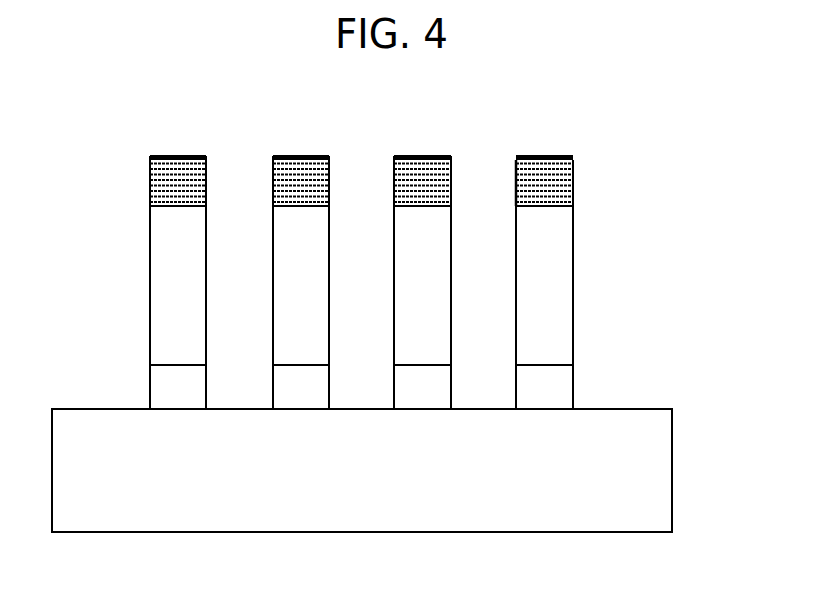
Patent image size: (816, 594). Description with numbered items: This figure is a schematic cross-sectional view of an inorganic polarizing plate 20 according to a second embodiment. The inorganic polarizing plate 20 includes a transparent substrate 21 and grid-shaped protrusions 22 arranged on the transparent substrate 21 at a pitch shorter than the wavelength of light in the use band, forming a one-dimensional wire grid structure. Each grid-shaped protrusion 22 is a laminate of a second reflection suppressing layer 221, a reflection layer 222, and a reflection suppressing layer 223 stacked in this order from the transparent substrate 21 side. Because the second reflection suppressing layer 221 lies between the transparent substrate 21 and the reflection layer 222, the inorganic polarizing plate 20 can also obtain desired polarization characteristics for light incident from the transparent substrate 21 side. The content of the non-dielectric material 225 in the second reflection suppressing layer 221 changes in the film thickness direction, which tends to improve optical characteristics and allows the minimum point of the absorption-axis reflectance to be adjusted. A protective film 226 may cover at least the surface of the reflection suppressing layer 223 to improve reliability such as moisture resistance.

The inorganic polarizing plate 20 is at (393, 302).
The transparent substrate 21 is at (662, 477).
The grid-shaped protrusion 22 is at (431, 247).
The second reflection suppressing layer 221 is at (565, 386).
The reflection layer 222 is at (565, 282).
The reflection suppressing layer 223 is at (567, 181).
The non-dielectric material 225 is at (517, 171).
The protective film 226 is at (547, 156).